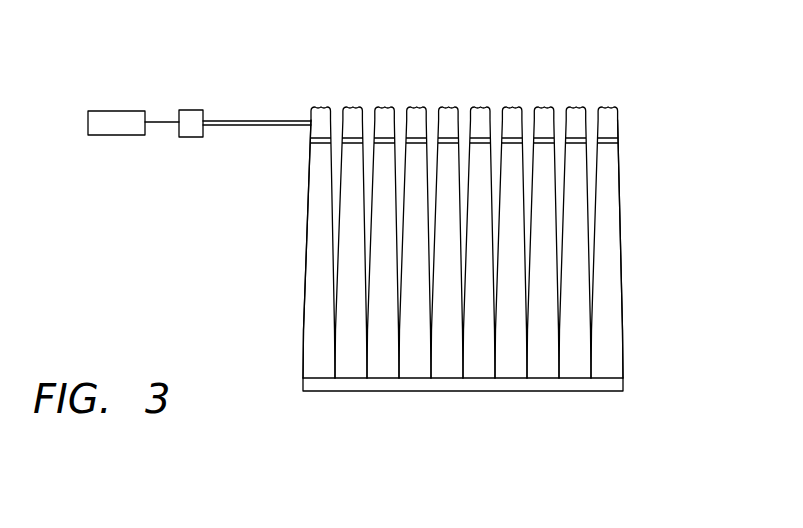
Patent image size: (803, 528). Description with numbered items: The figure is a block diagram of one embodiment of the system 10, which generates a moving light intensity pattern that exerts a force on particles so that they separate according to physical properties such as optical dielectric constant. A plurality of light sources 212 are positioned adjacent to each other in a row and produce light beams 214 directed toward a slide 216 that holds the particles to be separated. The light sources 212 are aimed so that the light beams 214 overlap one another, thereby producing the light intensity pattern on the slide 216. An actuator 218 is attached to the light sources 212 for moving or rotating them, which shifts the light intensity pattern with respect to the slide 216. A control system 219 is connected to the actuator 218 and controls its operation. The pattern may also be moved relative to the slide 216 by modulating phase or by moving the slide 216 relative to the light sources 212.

The system 10 is at (199, 257).
The light sources 212 is at (311, 112).
The light beams 214 is at (304, 285).
The slide 216 is at (303, 384).
The actuator 218 is at (190, 110).
The control system 219 is at (113, 111).